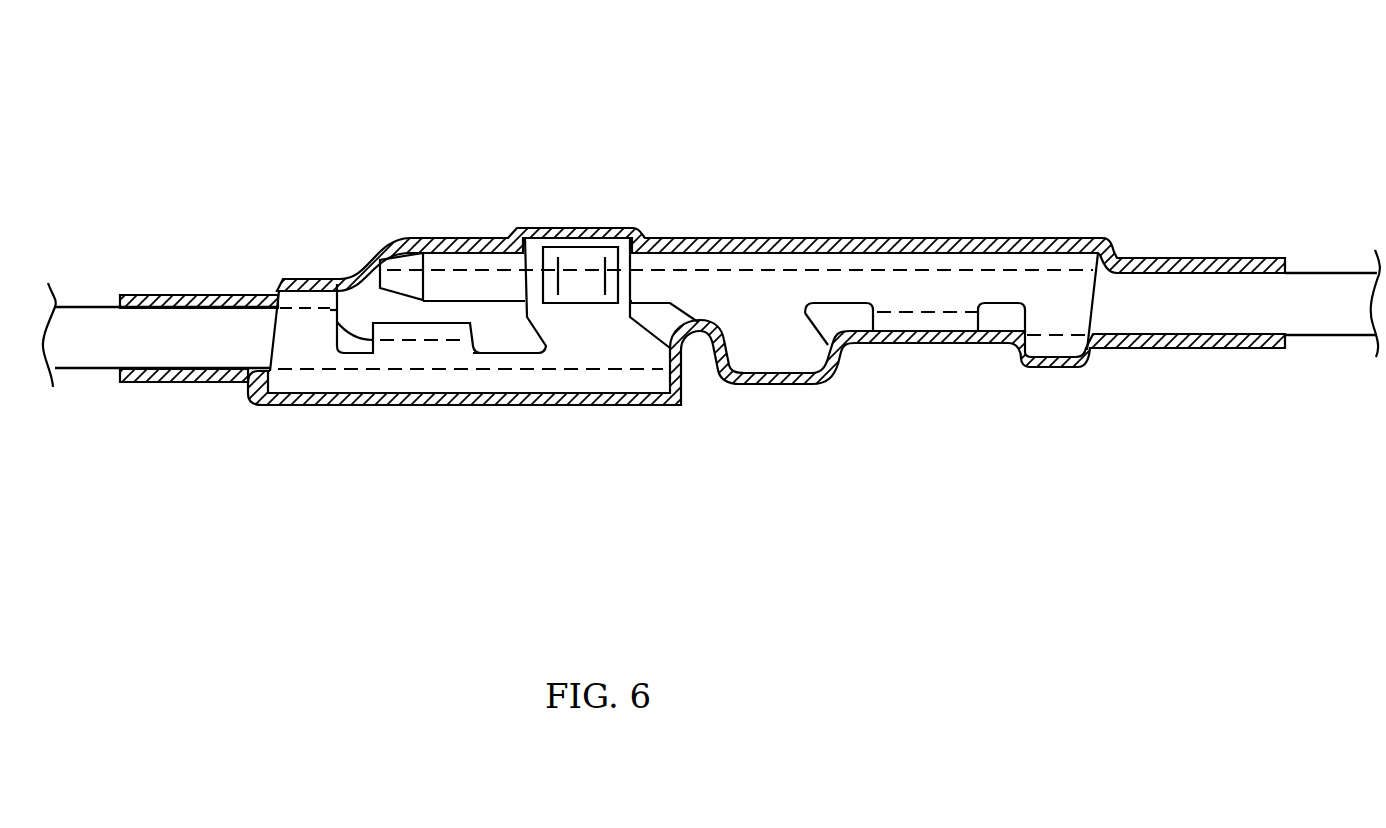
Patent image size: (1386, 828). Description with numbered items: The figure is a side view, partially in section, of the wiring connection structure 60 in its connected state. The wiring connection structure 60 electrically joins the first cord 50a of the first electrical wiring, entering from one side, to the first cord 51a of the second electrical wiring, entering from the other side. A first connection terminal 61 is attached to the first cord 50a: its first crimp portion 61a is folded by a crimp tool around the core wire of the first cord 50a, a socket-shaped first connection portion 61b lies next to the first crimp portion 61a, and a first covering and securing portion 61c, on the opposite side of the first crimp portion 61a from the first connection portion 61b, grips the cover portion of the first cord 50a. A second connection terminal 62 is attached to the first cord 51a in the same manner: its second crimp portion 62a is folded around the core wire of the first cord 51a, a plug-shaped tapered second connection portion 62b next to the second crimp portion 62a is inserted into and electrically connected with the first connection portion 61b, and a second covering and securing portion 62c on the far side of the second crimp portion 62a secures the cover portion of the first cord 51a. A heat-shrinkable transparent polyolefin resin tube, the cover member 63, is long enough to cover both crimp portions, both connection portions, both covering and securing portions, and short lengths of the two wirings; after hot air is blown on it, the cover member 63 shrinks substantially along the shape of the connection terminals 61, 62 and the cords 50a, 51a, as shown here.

The first cord of the first electrical wiring 50a is at (107, 330).
The first cord of the second electrical wiring 51a is at (1318, 290).
The wiring connection structure 60 is at (781, 170).
The first connection terminal 61 is at (520, 380).
The first crimp portion 61a is at (432, 330).
The first connection portion 61b is at (588, 232).
The first covering and securing portion 61c is at (300, 295).
The second connection terminal 62 is at (847, 315).
The second crimp portion 62a is at (945, 340).
The second connection portion 62b is at (503, 282).
The second covering and securing portion 62c is at (1063, 345).
The cover member 63 is at (927, 240).